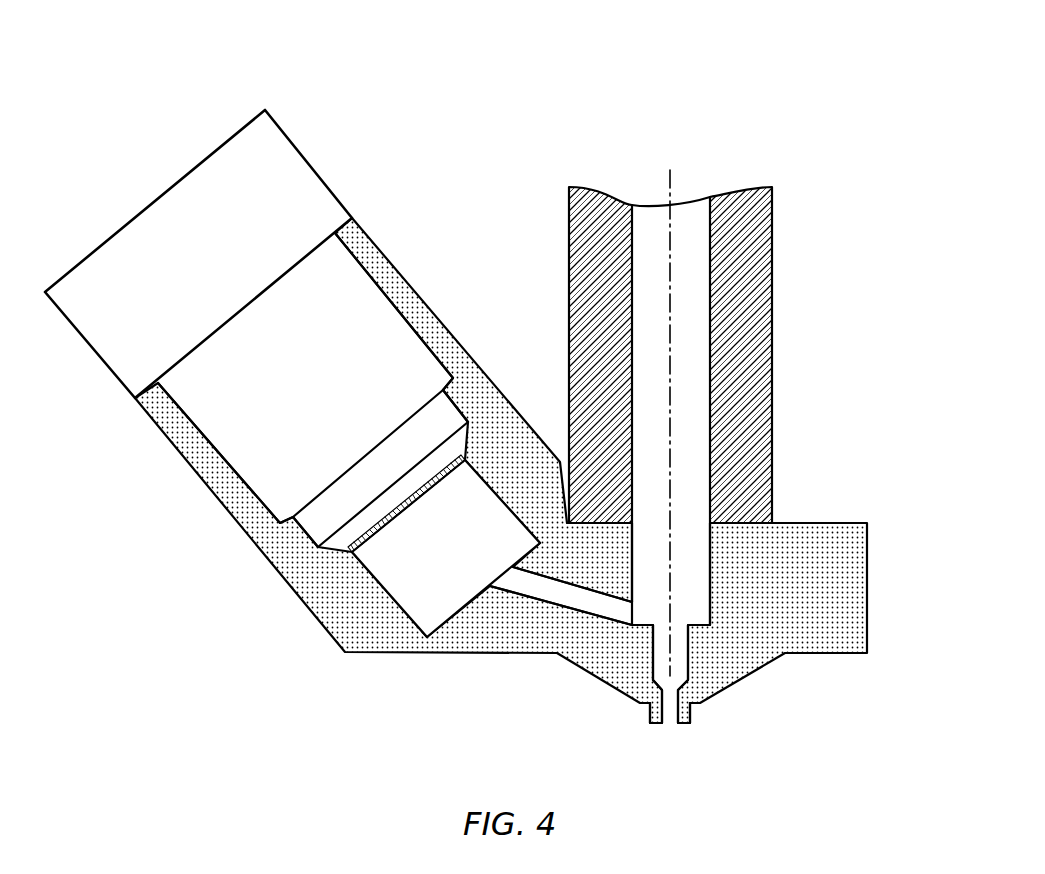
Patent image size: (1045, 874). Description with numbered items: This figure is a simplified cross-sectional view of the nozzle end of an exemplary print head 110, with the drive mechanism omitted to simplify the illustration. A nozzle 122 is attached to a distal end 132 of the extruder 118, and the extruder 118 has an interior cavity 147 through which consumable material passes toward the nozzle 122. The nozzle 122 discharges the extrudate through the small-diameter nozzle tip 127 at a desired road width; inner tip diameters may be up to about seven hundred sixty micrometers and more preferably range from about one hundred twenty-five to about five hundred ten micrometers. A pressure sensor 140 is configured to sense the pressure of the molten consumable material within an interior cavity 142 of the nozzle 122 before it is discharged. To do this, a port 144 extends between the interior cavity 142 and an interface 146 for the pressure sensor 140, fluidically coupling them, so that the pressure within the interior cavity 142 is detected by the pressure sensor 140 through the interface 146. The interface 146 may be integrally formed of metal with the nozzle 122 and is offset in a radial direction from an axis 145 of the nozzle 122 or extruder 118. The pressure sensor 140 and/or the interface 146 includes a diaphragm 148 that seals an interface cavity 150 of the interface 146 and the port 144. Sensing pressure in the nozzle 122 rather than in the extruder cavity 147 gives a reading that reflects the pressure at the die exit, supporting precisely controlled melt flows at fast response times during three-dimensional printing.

The print head 110 is at (802, 82).
The extruder 118 is at (830, 232).
The nozzle 122 is at (838, 548).
The nozzle tip 127 is at (688, 723).
The distal end 132 is at (762, 492).
The pressure sensor 140 is at (125, 240).
The interior cavity 142 is at (702, 603).
The port 144 is at (553, 598).
The axis 145 is at (672, 277).
The interface 146 is at (245, 512).
The interior cavity 147 is at (675, 355).
The diaphragm 148 is at (408, 503).
The interface cavity 150 is at (402, 575).